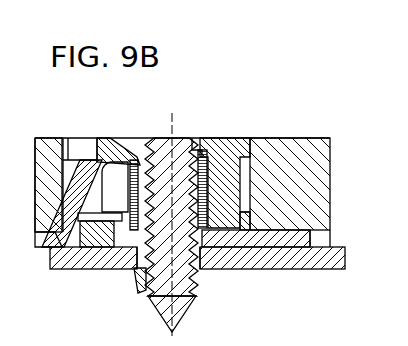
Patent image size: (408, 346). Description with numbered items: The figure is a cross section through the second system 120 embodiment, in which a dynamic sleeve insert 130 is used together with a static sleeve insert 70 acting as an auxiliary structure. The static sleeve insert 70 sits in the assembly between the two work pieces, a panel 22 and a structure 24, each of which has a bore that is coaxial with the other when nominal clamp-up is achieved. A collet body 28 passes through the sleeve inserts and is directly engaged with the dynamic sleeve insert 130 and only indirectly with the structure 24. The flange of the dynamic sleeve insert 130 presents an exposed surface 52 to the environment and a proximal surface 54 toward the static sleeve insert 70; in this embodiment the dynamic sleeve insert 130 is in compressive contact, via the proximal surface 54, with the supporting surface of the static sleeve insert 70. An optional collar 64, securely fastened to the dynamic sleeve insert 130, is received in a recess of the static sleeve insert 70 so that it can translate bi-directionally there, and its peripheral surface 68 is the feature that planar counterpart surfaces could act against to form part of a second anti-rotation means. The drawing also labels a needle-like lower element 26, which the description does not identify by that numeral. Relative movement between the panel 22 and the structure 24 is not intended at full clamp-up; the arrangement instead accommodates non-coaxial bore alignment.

The system 120 is at (100, 104).
The panel 22 is at (330, 138).
The structure 24 is at (322, 269).
The needle tip 26 is at (180, 316).
The collet body 28 is at (142, 272).
The exposed surface 52 is at (118, 138).
The proximal surface 54 is at (107, 175).
The collar 64 is at (227, 256).
The peripheral surface 68 is at (108, 240).
The static sleeve insert 70 is at (324, 240).
The dynamic sleeve insert 130 is at (206, 127).